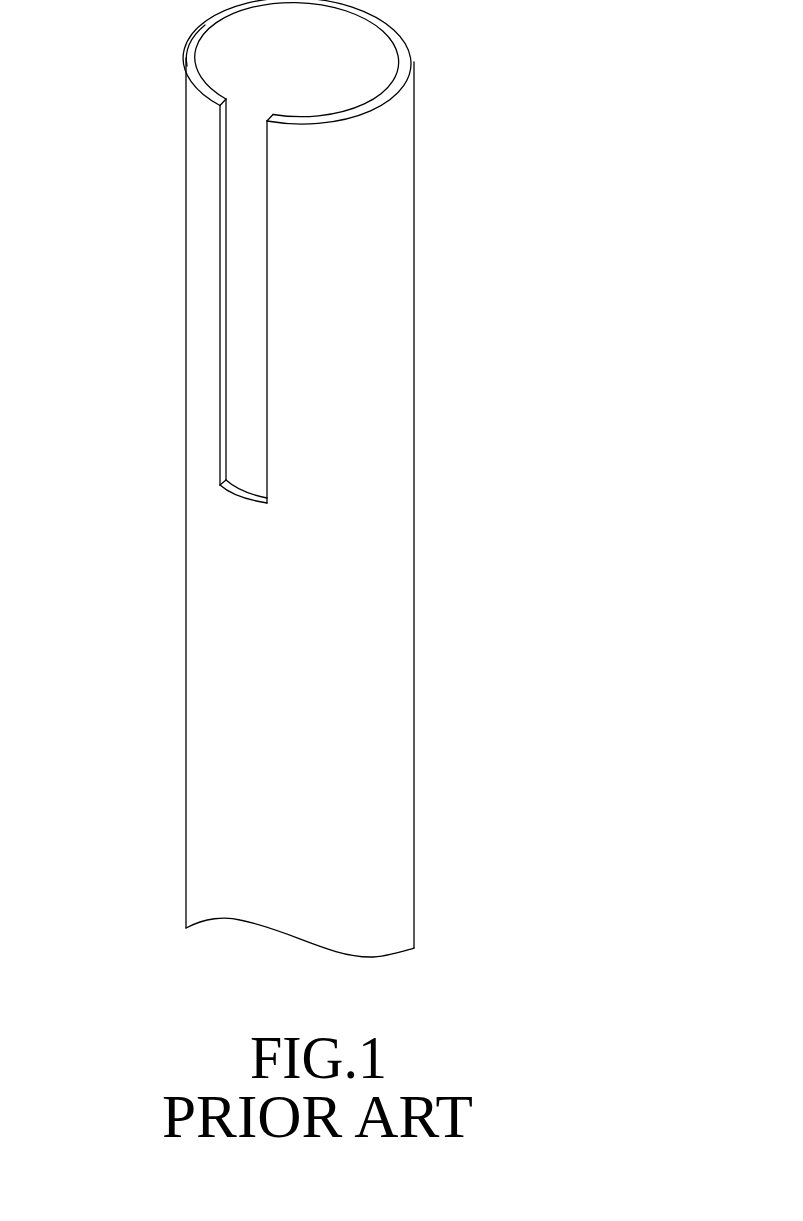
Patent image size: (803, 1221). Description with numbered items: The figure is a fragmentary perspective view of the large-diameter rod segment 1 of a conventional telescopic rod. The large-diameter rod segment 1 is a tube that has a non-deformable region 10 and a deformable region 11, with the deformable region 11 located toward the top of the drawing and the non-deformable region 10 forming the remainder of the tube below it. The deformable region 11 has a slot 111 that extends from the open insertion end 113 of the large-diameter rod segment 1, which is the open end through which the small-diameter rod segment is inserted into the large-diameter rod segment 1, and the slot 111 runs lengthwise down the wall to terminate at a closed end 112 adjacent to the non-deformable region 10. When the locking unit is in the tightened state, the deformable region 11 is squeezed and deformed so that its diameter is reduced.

The large-diameter rod segment 1 is at (343, 478).
The non-deformable region 10 is at (372, 605).
The deformable region 11 is at (402, 158).
The slot 111 is at (321, 301).
The closed end 112 is at (243, 490).
The open insertion end 113 is at (193, 55).